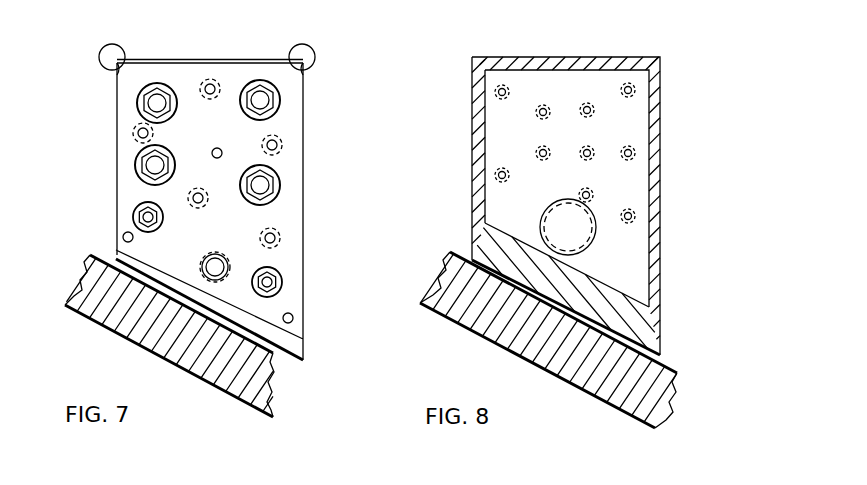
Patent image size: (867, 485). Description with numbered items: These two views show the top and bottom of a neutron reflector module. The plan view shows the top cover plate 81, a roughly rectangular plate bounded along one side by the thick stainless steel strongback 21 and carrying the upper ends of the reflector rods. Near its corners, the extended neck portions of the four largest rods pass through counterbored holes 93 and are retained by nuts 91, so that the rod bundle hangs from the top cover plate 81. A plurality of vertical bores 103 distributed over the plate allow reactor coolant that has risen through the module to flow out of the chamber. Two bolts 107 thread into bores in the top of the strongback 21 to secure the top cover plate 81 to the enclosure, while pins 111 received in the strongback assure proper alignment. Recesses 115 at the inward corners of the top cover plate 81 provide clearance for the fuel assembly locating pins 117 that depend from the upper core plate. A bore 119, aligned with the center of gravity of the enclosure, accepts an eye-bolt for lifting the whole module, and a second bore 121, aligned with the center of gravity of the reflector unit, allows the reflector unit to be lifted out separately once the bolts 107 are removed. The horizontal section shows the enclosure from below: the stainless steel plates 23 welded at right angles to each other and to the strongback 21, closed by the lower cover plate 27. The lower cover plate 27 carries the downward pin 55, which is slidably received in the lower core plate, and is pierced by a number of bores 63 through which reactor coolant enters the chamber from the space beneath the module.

In FIG. 8, the strongback 21 is at (658, 334).
In FIG. 8, the stainless steel plates 23 is at (661, 136).
In FIG. 8, the lower cover plate 27 is at (638, 183).
In FIG. 8, the pin 55 is at (595, 240).
In FIG. 8, the bores 63 is at (633, 90).
In FIG. 7, the top cover plate 81 is at (287, 215).
In FIG. 7, the nuts 91 is at (150, 107).
In FIG. 7, the counterbored holes 93 is at (155, 82).
In FIG. 7, the vertical bores 103 is at (213, 80).
In FIG. 7, the bolts 107 is at (137, 213).
In FIG. 7, the pins 111 is at (122, 238).
In FIG. 7, the recesses 115 is at (117, 74).
In FIG. 7, the fuel assembly locating pins 117 is at (106, 48).
In FIG. 7, the bore 119 is at (204, 263).
In FIG. 7, the bore 121 is at (222, 151).